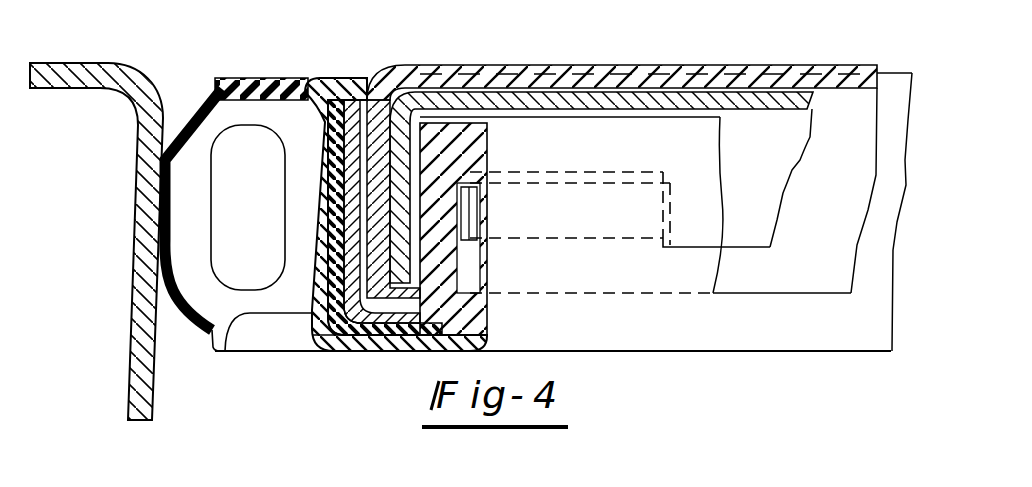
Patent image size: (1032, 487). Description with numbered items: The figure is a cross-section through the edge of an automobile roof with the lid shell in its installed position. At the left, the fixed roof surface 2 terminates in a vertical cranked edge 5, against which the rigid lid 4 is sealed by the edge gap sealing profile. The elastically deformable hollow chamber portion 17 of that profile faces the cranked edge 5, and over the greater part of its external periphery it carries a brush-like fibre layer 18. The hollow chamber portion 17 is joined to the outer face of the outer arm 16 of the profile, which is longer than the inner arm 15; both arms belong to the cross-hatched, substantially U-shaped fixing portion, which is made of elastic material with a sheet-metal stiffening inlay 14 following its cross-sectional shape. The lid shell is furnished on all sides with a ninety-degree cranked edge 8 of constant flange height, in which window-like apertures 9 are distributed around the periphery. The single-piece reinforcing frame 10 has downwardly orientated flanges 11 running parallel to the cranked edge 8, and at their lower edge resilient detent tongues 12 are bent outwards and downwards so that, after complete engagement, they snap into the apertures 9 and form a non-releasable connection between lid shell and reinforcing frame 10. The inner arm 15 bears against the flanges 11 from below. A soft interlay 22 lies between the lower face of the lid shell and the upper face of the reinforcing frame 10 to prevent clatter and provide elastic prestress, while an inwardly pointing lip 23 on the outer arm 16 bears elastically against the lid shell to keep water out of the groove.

The fixed roof surface 2 is at (56, 72).
The lid 4 is at (491, 64).
The vertical cranked edge 5 is at (138, 376).
The cranked edge 8 is at (383, 178).
The window-like apertures 9 is at (378, 200).
The reinforcing frame 10 is at (537, 100).
The flanges 11 is at (481, 140).
The detent tongues 12 is at (375, 217).
The stiffening inlay 14 is at (343, 352).
The inner arm 15 is at (472, 238).
The outer arm 16 is at (323, 241).
The hollow chamber portion 17 is at (213, 127).
The brush-like fibre layer 18 is at (298, 88).
The soft interlay 22 is at (803, 88).
The inwardly pointing lip 23 is at (366, 87).